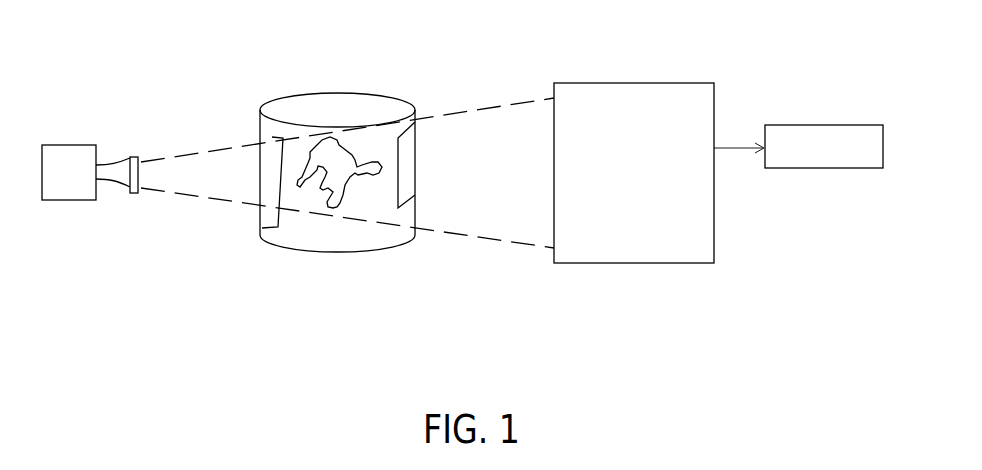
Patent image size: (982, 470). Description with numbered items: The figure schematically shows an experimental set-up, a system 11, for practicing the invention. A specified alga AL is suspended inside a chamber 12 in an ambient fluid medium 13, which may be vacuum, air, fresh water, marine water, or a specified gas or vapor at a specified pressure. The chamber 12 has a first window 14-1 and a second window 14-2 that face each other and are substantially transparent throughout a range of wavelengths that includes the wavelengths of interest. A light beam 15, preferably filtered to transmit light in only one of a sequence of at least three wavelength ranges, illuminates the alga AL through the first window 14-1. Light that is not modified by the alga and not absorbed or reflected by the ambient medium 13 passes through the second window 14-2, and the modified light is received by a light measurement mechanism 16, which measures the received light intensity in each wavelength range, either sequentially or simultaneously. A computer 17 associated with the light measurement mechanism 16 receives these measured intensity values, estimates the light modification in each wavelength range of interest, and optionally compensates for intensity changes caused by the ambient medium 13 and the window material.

The system 11 is at (462, 140).
The chamber 12 is at (280, 102).
The ambient fluid medium 13 is at (343, 177).
The first window 14-1 is at (270, 197).
The second window 14-2 is at (408, 150).
The light beam 15 is at (233, 163).
The light measurement mechanism 16 is at (678, 85).
The computer 17 is at (797, 128).